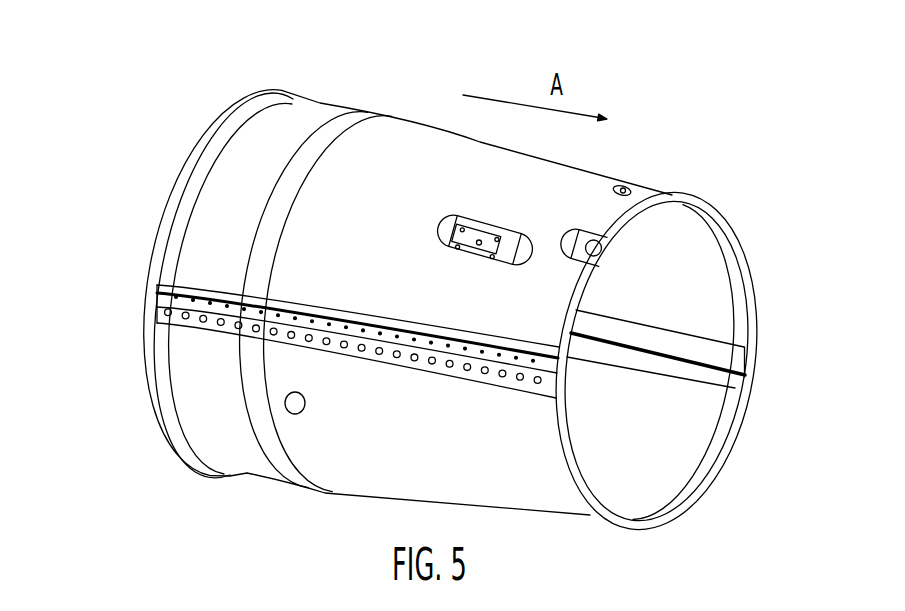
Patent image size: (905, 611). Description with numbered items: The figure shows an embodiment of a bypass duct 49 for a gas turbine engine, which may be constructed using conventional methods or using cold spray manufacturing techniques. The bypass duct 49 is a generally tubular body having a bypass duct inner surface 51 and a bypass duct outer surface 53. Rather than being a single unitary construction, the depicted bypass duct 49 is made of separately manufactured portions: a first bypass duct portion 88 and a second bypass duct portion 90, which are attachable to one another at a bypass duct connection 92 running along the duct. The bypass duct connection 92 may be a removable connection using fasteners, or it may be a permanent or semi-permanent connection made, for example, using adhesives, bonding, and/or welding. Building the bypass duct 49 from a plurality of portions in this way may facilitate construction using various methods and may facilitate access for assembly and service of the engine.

The bypass duct 49 is at (647, 103).
The bypass duct inner surface 51 is at (727, 298).
The bypass duct outer surface 53 is at (442, 142).
The first bypass duct portion 88 is at (163, 111).
The second bypass duct portion 90 is at (130, 395).
The bypass duct connection 92 is at (173, 287).